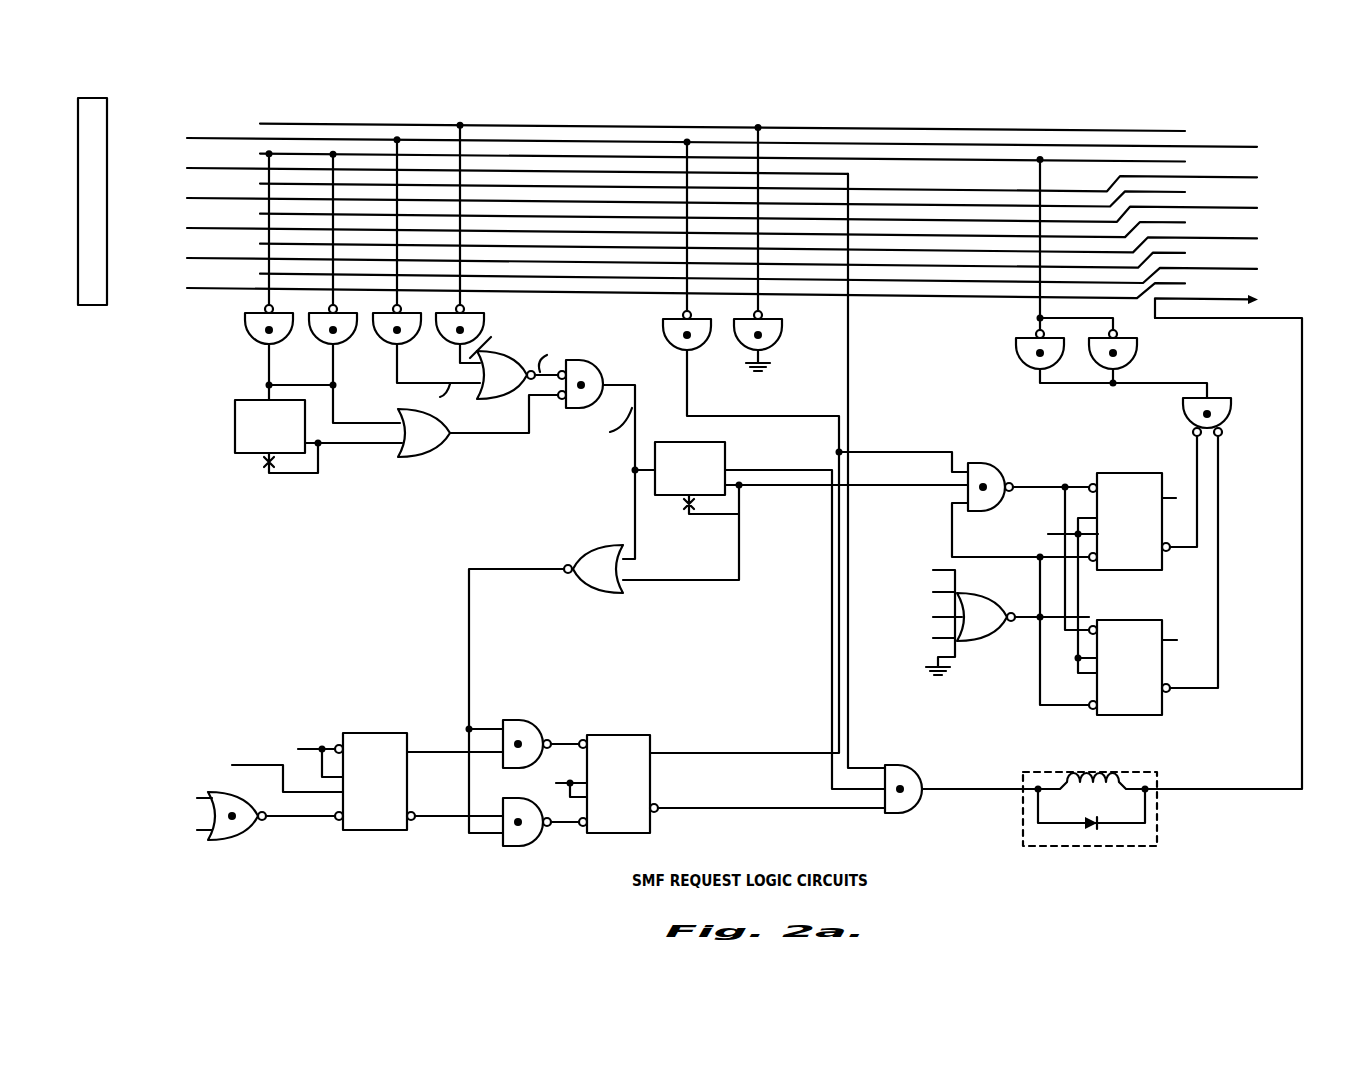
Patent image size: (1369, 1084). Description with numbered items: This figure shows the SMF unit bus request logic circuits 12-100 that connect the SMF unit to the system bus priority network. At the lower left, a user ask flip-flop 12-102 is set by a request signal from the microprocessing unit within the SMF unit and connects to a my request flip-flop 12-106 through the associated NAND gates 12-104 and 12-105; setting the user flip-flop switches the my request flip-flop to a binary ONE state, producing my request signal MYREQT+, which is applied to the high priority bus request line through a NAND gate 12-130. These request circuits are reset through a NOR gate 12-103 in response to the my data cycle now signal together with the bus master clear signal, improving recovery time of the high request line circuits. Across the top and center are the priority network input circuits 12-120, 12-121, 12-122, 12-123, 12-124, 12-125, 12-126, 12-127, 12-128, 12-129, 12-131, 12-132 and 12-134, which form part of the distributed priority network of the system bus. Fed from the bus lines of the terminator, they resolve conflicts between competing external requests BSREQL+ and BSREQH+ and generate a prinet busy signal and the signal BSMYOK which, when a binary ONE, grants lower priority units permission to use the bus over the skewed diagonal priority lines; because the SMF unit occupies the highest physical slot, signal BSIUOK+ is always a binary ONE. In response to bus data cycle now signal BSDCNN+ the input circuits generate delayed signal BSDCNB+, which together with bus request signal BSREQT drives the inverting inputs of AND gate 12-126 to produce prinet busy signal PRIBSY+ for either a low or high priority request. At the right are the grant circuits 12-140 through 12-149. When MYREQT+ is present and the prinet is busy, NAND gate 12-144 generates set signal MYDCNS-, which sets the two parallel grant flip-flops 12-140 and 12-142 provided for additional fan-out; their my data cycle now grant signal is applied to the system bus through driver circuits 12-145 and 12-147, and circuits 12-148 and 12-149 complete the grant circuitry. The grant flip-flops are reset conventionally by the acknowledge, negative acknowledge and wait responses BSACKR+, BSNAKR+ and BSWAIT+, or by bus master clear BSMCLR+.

The SMF unit bus request logic circuits 12-100 is at (290, 584).
The user ask flip-flop 12-102 is at (358, 733).
The NOR gate 12-103 is at (232, 840).
The NAND gate 12-104 is at (515, 720).
The NAND gate 12-105 is at (515, 846).
The my request flip-flop 12-106 is at (632, 735).
The priority network input circuit 12-120 is at (252, 453).
The priority network input circuit 12-121 is at (245, 325).
The priority network input circuit 12-122 is at (327, 344).
The priority network input circuit 12-123 is at (391, 344).
The priority network input circuit 12-124 is at (455, 344).
The priority network input circuit 12-125 is at (495, 399).
The AND gate 12-126 is at (603, 367).
The priority network input circuit 12-127 is at (430, 457).
The priority network input circuit 12-128 is at (714, 442).
The priority network input circuit 12-129 is at (603, 593).
The NAND gate 12-130 is at (776, 326).
The priority network input circuit 12-131 is at (668, 322).
The priority network input circuit 12-132 is at (897, 765).
The priority network input circuit 12-134 is at (1090, 772).
The grant flip-flop 12-140 is at (1140, 570).
The grant flip-flop 12-142 is at (1132, 620).
The NAND gate 12-144 is at (975, 463).
The driver circuit 12-145 is at (1140, 340).
The driver circuit 12-147 is at (1016, 340).
The grant circuit 12-148 is at (962, 641).
The grant circuit 12-149 is at (1222, 402).